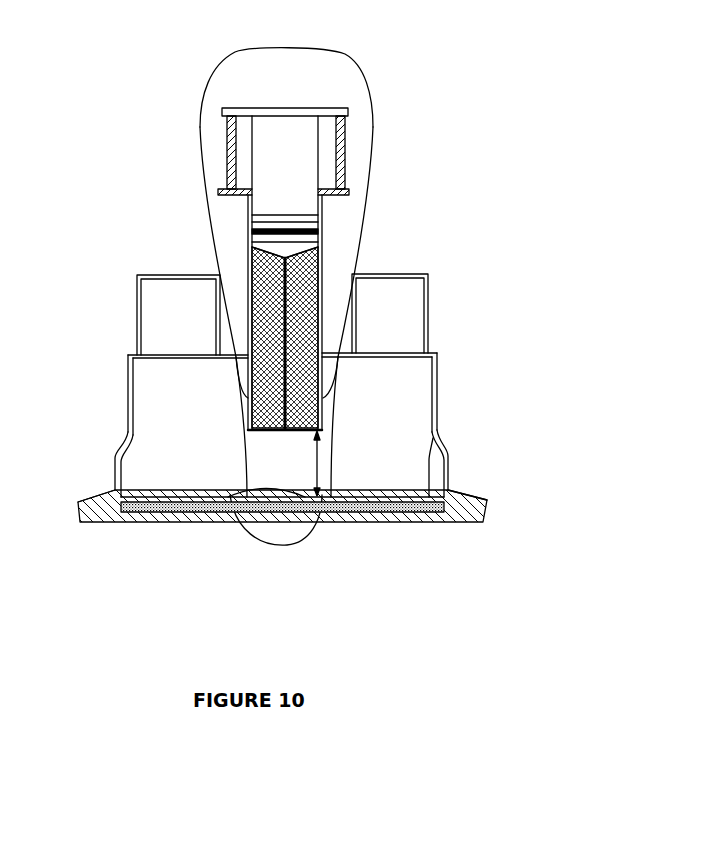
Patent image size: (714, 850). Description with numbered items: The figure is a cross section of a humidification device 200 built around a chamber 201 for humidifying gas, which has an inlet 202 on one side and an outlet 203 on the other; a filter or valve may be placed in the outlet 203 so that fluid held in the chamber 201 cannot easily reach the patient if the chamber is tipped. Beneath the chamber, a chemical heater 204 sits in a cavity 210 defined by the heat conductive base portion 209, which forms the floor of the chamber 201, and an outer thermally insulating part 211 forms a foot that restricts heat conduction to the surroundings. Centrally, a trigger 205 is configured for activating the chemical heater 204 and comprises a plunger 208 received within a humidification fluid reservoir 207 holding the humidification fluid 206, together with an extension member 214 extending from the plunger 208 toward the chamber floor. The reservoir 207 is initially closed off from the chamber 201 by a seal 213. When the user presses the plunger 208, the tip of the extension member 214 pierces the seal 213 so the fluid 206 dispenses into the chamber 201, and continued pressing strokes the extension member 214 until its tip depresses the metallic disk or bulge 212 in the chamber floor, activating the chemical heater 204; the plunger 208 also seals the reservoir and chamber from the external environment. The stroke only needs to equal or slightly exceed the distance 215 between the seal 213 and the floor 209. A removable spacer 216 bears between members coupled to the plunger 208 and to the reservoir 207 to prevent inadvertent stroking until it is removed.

The device 200 is at (134, 86).
The chamber 201 is at (153, 454).
The inlet 202 is at (153, 275).
The outlet 203 is at (407, 274).
The chemical heater 204 is at (408, 522).
The trigger 205 is at (371, 77).
The humidification fluid 206 is at (302, 285).
The humidification fluid reservoir 207 is at (285, 252).
The plunger 208 is at (283, 237).
The base portion 209 is at (440, 432).
The cavity 210 is at (282, 507).
The outer thermally insulating part 211 is at (468, 497).
The metallic disk or bulge 212 is at (238, 497).
The seal 213 is at (245, 437).
The extension member 214 is at (289, 343).
The distance 215 is at (318, 462).
The removable spacer 216 is at (345, 148).